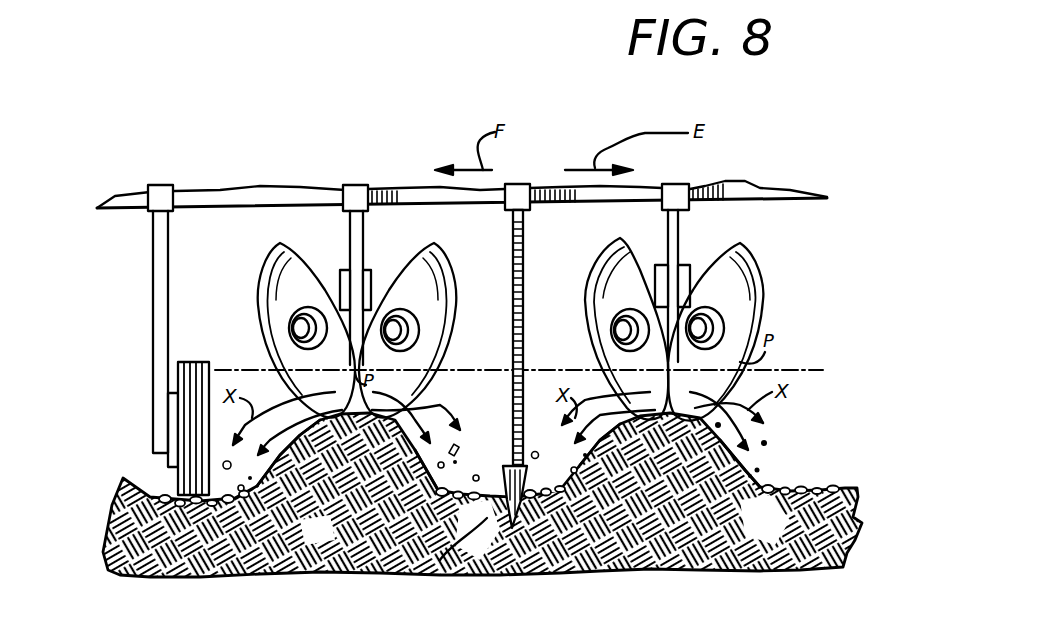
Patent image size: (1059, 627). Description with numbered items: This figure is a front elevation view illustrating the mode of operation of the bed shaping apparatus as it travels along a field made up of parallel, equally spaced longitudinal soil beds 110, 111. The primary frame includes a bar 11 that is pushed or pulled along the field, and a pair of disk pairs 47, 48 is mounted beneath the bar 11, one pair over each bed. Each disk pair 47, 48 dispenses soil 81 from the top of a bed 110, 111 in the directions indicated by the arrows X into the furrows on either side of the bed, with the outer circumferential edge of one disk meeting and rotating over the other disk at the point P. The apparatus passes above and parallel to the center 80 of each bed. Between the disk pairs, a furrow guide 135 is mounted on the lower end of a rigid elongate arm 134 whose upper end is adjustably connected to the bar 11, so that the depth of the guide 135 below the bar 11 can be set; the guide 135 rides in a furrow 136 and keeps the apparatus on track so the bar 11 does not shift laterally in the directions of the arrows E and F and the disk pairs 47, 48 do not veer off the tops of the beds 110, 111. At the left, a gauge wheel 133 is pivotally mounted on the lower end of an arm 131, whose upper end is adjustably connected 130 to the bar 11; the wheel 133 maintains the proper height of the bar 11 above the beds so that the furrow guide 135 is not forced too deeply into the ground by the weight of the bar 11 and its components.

The bar 11 is at (588, 207).
The disk 47 is at (280, 303).
The disk 48 is at (438, 298).
The center of the bed 80 is at (340, 495).
The soil 81 is at (209, 508).
The soil bed 110 is at (755, 478).
The soil bed 111 is at (283, 505).
The adjustable connection 130 is at (142, 214).
The arm 131 is at (153, 300).
The gauge wheel 133 is at (170, 477).
The rigid elongate arm 134 is at (520, 350).
The furrow guide 135 is at (504, 464).
The furrow 136 is at (440, 560).